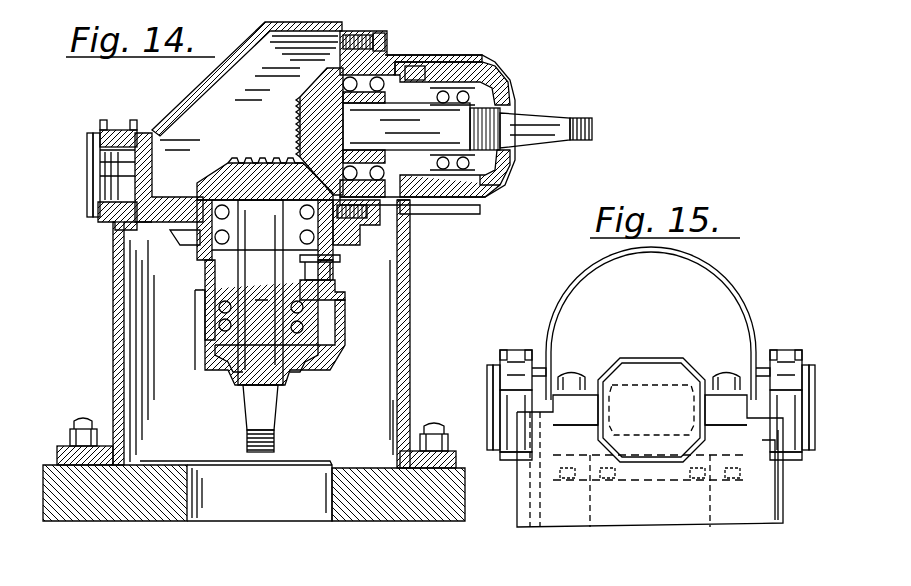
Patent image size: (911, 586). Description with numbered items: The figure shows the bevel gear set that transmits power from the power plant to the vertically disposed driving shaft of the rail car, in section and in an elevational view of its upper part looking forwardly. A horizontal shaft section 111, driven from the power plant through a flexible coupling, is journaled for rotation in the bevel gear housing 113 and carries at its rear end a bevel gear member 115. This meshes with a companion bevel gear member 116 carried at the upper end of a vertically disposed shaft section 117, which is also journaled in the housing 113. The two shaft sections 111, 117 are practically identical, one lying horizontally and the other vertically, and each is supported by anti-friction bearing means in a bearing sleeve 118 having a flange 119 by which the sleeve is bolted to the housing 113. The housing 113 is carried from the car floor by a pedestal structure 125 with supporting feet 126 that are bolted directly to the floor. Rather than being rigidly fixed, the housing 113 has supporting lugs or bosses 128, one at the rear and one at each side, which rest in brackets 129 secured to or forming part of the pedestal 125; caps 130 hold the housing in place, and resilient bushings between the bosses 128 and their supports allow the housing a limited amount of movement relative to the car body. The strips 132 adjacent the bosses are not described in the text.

In FIG. 14, the shaft section 111 is at (572, 142).
In FIG. 14, the bevel gear housing 113 is at (322, 30).
In FIG. 15, the bevel gear housing 113 is at (720, 275).
In FIG. 14, the bevel gear member 115 is at (300, 104).
In FIG. 14, the companion bevel gear member 116 is at (232, 165).
In FIG. 14, the vertically disposed shaft section 117 is at (320, 318).
In FIG. 14, the bearing sleeve 118 is at (207, 272).
In FIG. 14, the flange 119 is at (372, 40).
In FIG. 14, the pedestal structure 125 is at (113, 315).
In FIG. 15, the pedestal structure 125 is at (517, 522).
In FIG. 14, the supporting feet 126 is at (62, 436).
In FIG. 14, the supporting lugs or bosses 128 is at (92, 185).
In FIG. 15, the supporting lugs or bosses 128 is at (635, 375).
In FIG. 14, the brackets 129 is at (98, 226).
In FIG. 15, the brackets 129 is at (497, 458).
In FIG. 14, the caps 130 is at (122, 128).
In FIG. 15, the caps 130 is at (695, 366).
In FIG. 14, the clamping strip 132 is at (92, 133).
In FIG. 15, the clamping strip 132 is at (650, 367).